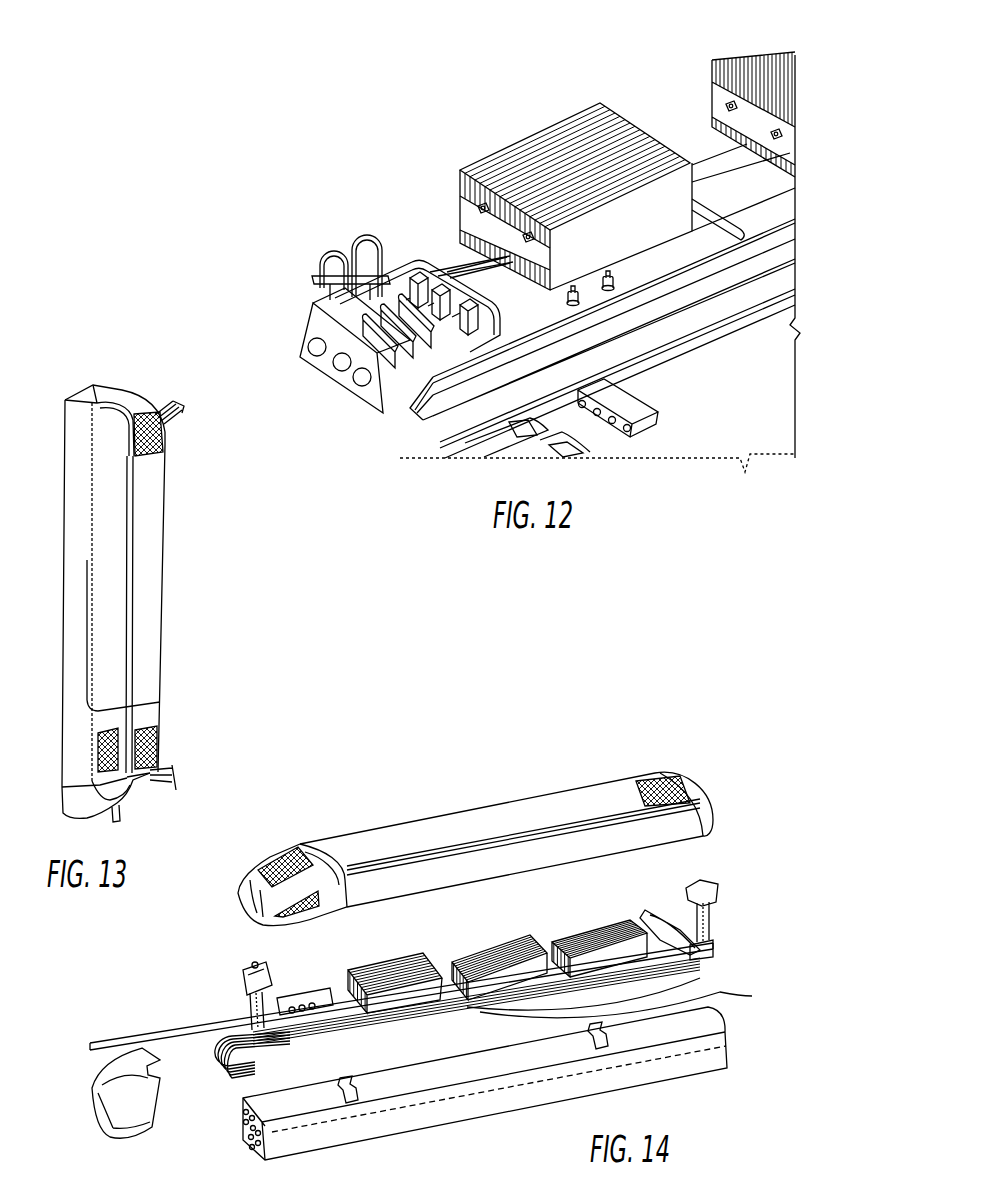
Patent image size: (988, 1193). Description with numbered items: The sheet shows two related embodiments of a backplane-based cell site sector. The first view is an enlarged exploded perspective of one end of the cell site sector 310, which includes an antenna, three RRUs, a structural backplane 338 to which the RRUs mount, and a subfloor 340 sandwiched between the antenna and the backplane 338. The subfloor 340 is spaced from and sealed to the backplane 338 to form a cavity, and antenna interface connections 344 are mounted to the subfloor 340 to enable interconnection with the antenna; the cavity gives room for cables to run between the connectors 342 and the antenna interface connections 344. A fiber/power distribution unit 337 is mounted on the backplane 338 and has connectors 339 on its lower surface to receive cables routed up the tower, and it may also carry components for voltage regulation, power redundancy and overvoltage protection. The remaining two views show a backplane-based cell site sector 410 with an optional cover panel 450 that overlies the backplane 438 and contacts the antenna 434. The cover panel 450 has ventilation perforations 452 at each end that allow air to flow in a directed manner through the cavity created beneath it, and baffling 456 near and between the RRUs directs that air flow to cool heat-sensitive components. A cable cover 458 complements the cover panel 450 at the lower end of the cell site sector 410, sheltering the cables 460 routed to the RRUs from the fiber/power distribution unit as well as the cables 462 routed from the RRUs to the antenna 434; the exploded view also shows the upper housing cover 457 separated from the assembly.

In FIG. 12, the cell site sector 310 is at (642, 60).
In FIG. 12, the fiber/power distribution unit 337 is at (313, 303).
In FIG. 12, the structural backplane 338 is at (491, 282).
In FIG. 12, the connectors 339 is at (307, 353).
In FIG. 12, the subfloor 340 is at (688, 397).
In FIG. 12, the connectors 342 is at (573, 291).
In FIG. 12, the antenna interface connections 344 is at (626, 438).
In FIG. 13, the backplane-based cell site sector 410 is at (275, 592).
In FIG. 14, the backplane-based cell site sector 410 is at (748, 910).
In FIG. 14, the antenna 434 is at (713, 1053).
In FIG. 14, the backplane 438 is at (670, 965).
In FIG. 13, the cover panel 450 is at (165, 535).
In FIG. 13, the ventilation perforations 452 is at (165, 433).
In FIG. 14, the ventilation perforations 452 is at (665, 778).
In FIG. 14, the baffling 456 is at (700, 985).
In FIG. 14, the upper housing cover 457 is at (270, 857).
In FIG. 14, the cable cover 458 is at (93, 1097).
In FIG. 14, the cables 460 is at (341, 1006).
In FIG. 14, the cables 462 is at (230, 1075).